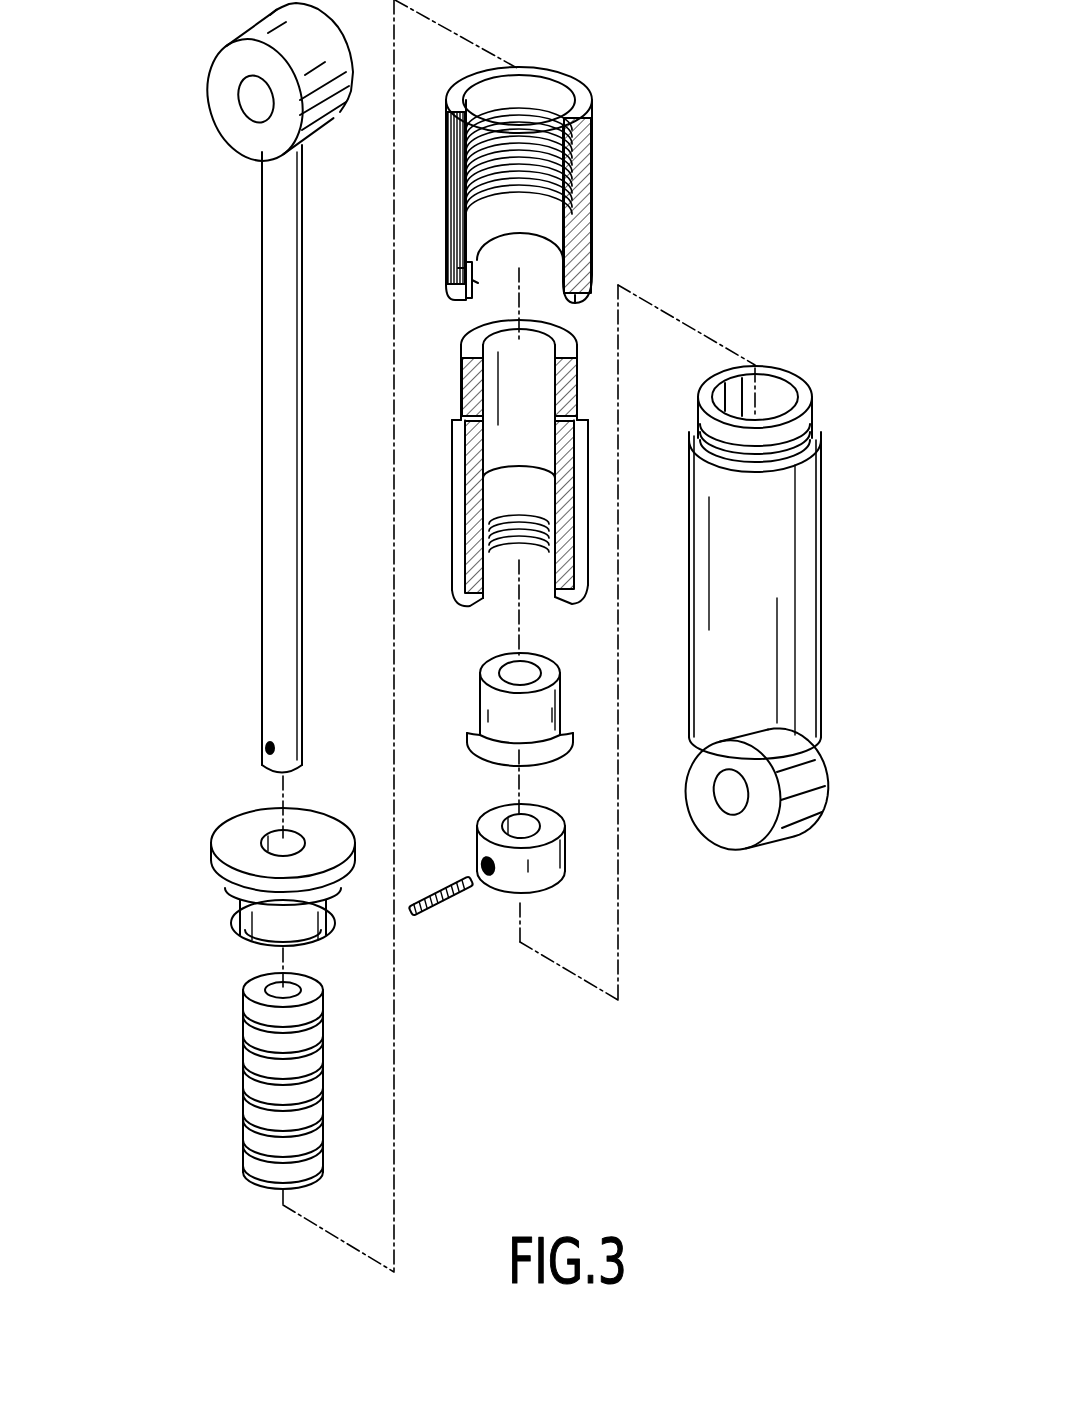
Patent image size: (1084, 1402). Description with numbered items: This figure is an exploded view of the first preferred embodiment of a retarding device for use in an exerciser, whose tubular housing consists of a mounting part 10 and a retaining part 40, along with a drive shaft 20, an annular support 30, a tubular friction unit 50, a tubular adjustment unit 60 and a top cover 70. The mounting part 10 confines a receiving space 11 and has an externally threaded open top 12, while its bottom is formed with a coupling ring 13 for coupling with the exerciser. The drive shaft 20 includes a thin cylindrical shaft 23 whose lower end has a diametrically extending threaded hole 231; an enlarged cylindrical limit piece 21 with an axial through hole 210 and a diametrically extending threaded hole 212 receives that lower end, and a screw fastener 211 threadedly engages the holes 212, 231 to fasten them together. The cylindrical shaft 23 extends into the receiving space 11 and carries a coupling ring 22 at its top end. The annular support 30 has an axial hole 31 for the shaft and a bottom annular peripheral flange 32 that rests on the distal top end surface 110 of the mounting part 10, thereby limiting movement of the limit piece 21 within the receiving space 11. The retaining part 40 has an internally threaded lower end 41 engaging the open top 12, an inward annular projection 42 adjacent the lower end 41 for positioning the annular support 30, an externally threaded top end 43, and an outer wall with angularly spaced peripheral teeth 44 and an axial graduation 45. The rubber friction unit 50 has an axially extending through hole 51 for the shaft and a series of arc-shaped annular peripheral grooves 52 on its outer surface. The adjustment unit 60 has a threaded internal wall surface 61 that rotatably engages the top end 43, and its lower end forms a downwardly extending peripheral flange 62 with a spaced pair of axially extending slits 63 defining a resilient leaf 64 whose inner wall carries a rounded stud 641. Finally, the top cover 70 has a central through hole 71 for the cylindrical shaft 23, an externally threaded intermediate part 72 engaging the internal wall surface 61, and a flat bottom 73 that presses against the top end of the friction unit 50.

The mounting part 10 is at (777, 606).
The receiving space 11 is at (767, 361).
The distal top end surface 110 is at (770, 398).
The open top 12 is at (802, 420).
The coupling ring 13 is at (763, 823).
The drive shaft 20 is at (269, 388).
The limit piece 21 is at (494, 901).
The axial through hole 210 is at (500, 830).
The screw fastener 211 is at (443, 908).
The diametrically extending threaded hole 212 is at (490, 880).
The coupling ring 22 is at (240, 125).
The cylindrical shaft 23 is at (254, 459).
The diametrically extending threaded hole 231 is at (263, 748).
The annular support 30 is at (511, 727).
The axial hole 31 is at (505, 678).
The annular peripheral flange 32 is at (556, 744).
The retaining part 40 is at (530, 487).
The lower end 41 is at (530, 547).
The inward annular projection 42 is at (537, 537).
The top end 43 is at (570, 358).
The peripheral teeth 44 is at (577, 457).
The graduation 45 is at (490, 525).
The tubular friction unit 50 is at (246, 1081).
The axially extending through hole 51 is at (270, 995).
The annular peripheral grooves 52 is at (252, 1102).
The tubular adjustment unit 60 is at (530, 207).
The threaded internal wall surface 61 is at (548, 108).
The peripheral flange 62 is at (577, 302).
The axially extending slits 63 is at (457, 280).
The resilient leaf 64 is at (463, 283).
The rounded stud 641 is at (478, 283).
The top cover 70 is at (263, 867).
The central through hole 71 is at (278, 852).
The intermediate part 72 is at (247, 913).
The flat bottom 73 is at (333, 927).